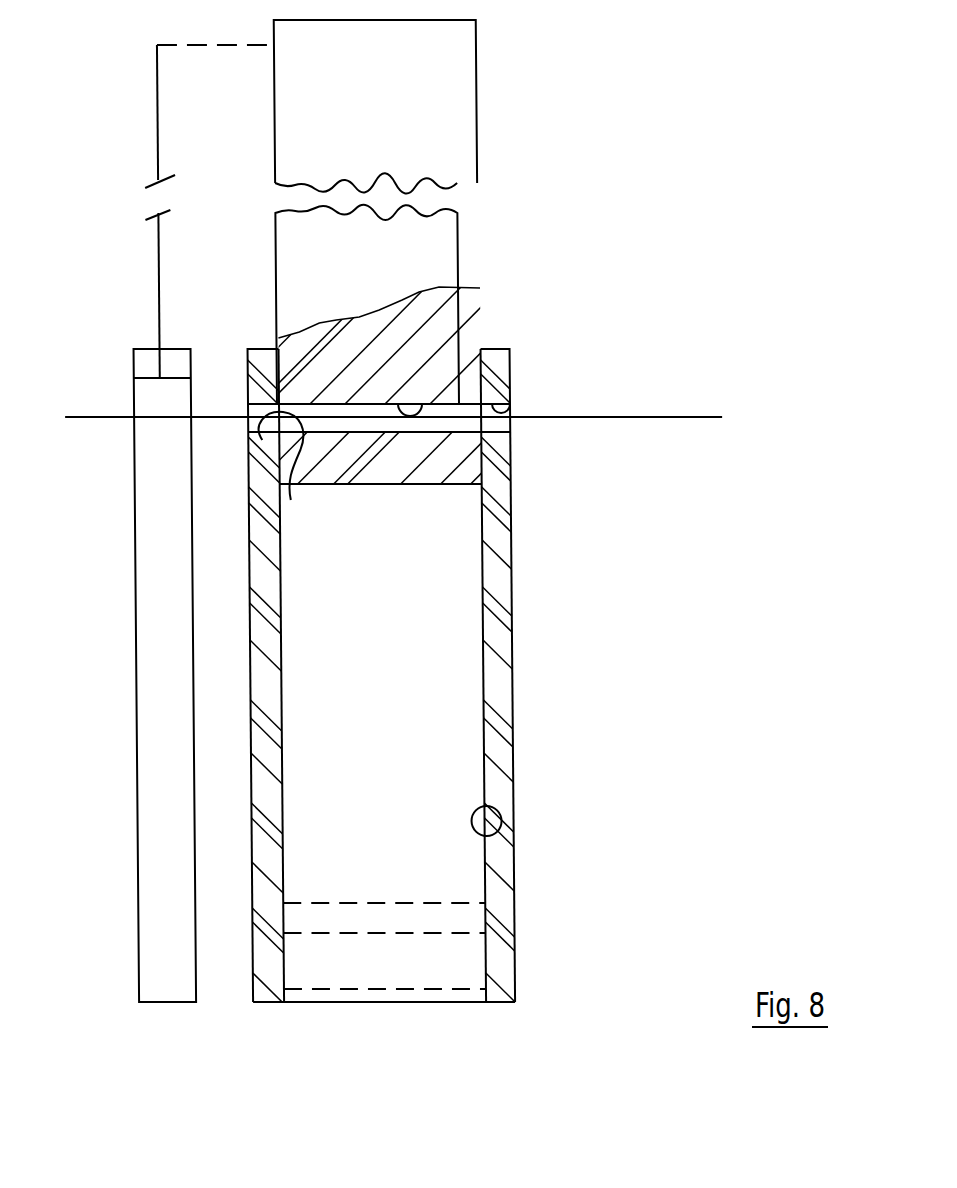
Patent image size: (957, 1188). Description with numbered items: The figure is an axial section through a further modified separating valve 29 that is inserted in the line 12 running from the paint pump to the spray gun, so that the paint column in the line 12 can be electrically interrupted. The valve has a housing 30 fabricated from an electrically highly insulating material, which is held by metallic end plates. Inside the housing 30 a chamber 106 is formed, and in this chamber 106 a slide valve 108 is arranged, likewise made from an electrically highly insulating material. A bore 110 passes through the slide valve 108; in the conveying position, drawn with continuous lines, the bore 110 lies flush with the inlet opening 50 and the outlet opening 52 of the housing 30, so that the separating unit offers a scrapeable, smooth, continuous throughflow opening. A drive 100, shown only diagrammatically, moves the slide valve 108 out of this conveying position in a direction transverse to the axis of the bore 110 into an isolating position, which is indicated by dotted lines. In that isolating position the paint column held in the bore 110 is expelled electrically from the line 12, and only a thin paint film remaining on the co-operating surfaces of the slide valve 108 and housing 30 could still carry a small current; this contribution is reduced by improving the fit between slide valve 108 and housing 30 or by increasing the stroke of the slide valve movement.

The line 12 is at (637, 417).
The sleeve assembly 29 is at (562, 656).
The housing 30 is at (508, 760).
The inlet opening 50 is at (518, 410).
The outlet opening 52 is at (290, 500).
The drive 100 is at (155, 603).
The chamber 106 is at (500, 833).
The slide valve 108 is at (449, 244).
The bore 110 is at (413, 404).